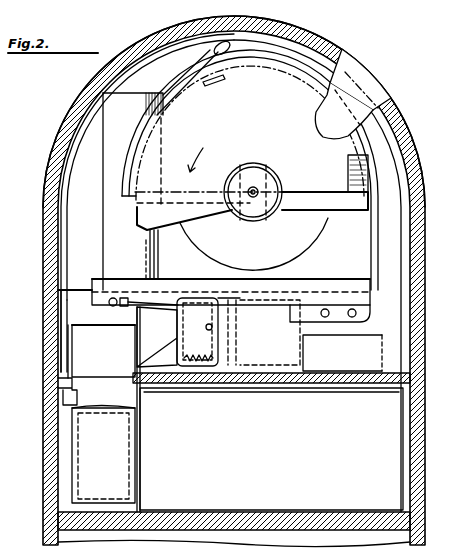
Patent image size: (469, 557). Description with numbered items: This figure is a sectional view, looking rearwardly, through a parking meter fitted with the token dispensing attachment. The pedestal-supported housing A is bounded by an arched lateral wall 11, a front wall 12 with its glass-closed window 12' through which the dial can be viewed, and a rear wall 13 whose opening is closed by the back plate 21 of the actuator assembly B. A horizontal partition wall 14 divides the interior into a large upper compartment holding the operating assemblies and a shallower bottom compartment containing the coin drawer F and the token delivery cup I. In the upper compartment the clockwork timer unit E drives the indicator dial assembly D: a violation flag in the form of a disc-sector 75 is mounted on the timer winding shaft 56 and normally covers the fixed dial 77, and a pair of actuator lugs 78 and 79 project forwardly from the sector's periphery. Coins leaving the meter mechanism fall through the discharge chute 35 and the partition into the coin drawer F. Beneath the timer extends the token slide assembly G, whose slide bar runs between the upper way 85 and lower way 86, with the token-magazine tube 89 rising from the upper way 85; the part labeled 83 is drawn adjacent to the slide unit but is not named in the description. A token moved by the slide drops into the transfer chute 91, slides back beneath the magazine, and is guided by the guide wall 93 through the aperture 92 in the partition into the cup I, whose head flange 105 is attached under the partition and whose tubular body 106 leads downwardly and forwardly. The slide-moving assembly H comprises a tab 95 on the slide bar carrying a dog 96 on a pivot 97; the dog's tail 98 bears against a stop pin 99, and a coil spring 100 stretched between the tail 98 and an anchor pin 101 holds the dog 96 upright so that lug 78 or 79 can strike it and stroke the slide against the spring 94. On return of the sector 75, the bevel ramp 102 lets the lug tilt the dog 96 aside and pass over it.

The housing unit A is at (71, 105).
The actuator assembly B is at (205, 321).
The indicator dial assembly D is at (150, 120).
The clockwork timer unit E is at (311, 244).
The coin drawer F is at (271, 449).
The token slide assembly G is at (62, 312).
The slide-moving assembly H is at (135, 335).
The token delivery cup I is at (103, 455).
The arched lateral wall 11 is at (50, 242).
The front wall 12 is at (362, 79).
The glass-closed window 12' is at (332, 112).
The rear wall 13 is at (54, 181).
The horizontal partition wall 14 is at (274, 386).
The back plate 21 is at (395, 243).
The discharge chute 35 is at (342, 353).
The timer winding shaft 56 is at (246, 192).
The disc-sector 75 is at (228, 177).
The fixed dial 77 is at (318, 205).
The actuator lug 78 is at (147, 226).
The actuator lug 79 is at (218, 85).
The table 83 is at (85, 283).
The upper way 85 is at (325, 288).
The lower way 86 is at (97, 310).
The token-magazine tube 89 is at (112, 165).
The transfer chute 91 is at (157, 337).
The aperture 92 is at (103, 351).
The guide wall 93 is at (70, 342).
The spring 94 is at (120, 306).
The tab 95 is at (246, 350).
The dog 96 is at (210, 309).
The pivot 97 is at (220, 326).
The tail 98 is at (248, 352).
The stop pin 99 is at (198, 347).
The coil spring 100 is at (212, 372).
The anchor pin 101 is at (190, 376).
The bevel ramp 102 is at (228, 298).
The head flange 105 is at (60, 396).
The tubular body 106 is at (103, 456).